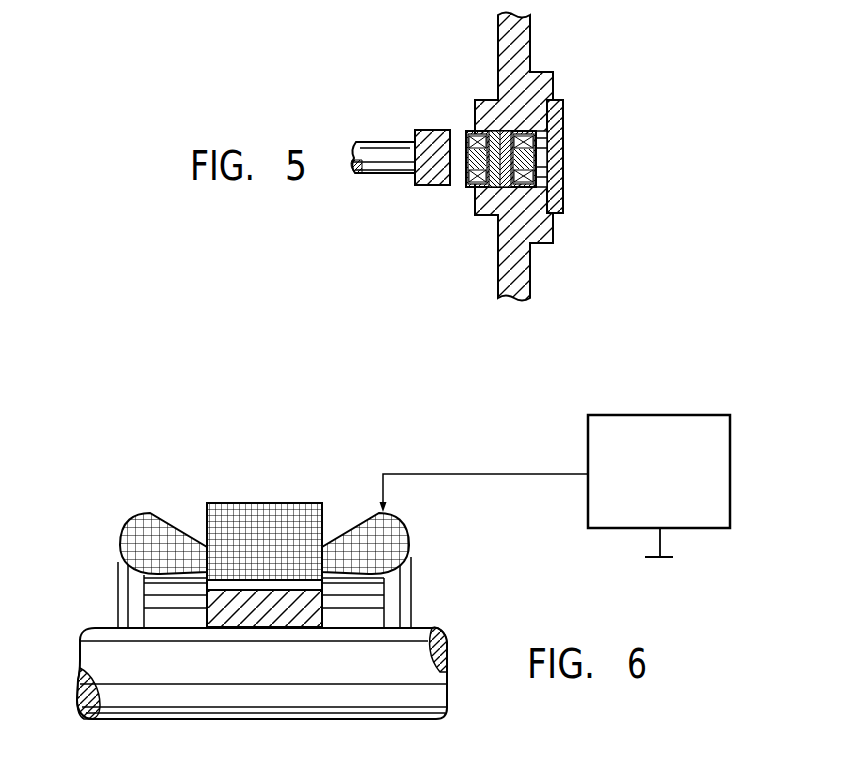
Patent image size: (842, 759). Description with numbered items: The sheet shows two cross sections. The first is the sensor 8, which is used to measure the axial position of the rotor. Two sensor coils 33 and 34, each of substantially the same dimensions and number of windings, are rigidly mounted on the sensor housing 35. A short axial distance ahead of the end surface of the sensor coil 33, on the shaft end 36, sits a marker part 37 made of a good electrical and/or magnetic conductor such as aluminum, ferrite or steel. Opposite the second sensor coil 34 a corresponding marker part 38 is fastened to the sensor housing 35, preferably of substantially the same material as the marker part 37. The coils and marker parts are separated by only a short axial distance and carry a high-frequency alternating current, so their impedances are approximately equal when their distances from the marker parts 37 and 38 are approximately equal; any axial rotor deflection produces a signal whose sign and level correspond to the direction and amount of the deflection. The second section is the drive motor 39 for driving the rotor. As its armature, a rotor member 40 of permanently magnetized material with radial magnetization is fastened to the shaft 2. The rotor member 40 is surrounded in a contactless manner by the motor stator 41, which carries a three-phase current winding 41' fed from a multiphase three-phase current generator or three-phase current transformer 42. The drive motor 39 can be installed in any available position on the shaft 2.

In FIG. 5, the sensor 8 is at (572, 74).
In FIG. 5, the sensor coil 33 is at (468, 131).
In FIG. 5, the second sensor coil 34 is at (547, 163).
In FIG. 5, the sensor housing 35 is at (551, 224).
In FIG. 5, the shaft end 36 is at (396, 168).
In FIG. 5, the marker part 37 is at (446, 186).
In FIG. 5, the marker part 38 is at (563, 108).
In FIG. 6, the shaft 2 is at (405, 647).
In FIG. 6, the drive motor 39 is at (193, 515).
In FIG. 6, the rotor member 40 is at (255, 608).
In FIG. 6, the motor stator 41 is at (264, 513).
In FIG. 6, the three-phase current winding 41' is at (394, 570).
In FIG. 6, the three-phase current generator or three-phase current transformer 42 is at (590, 452).